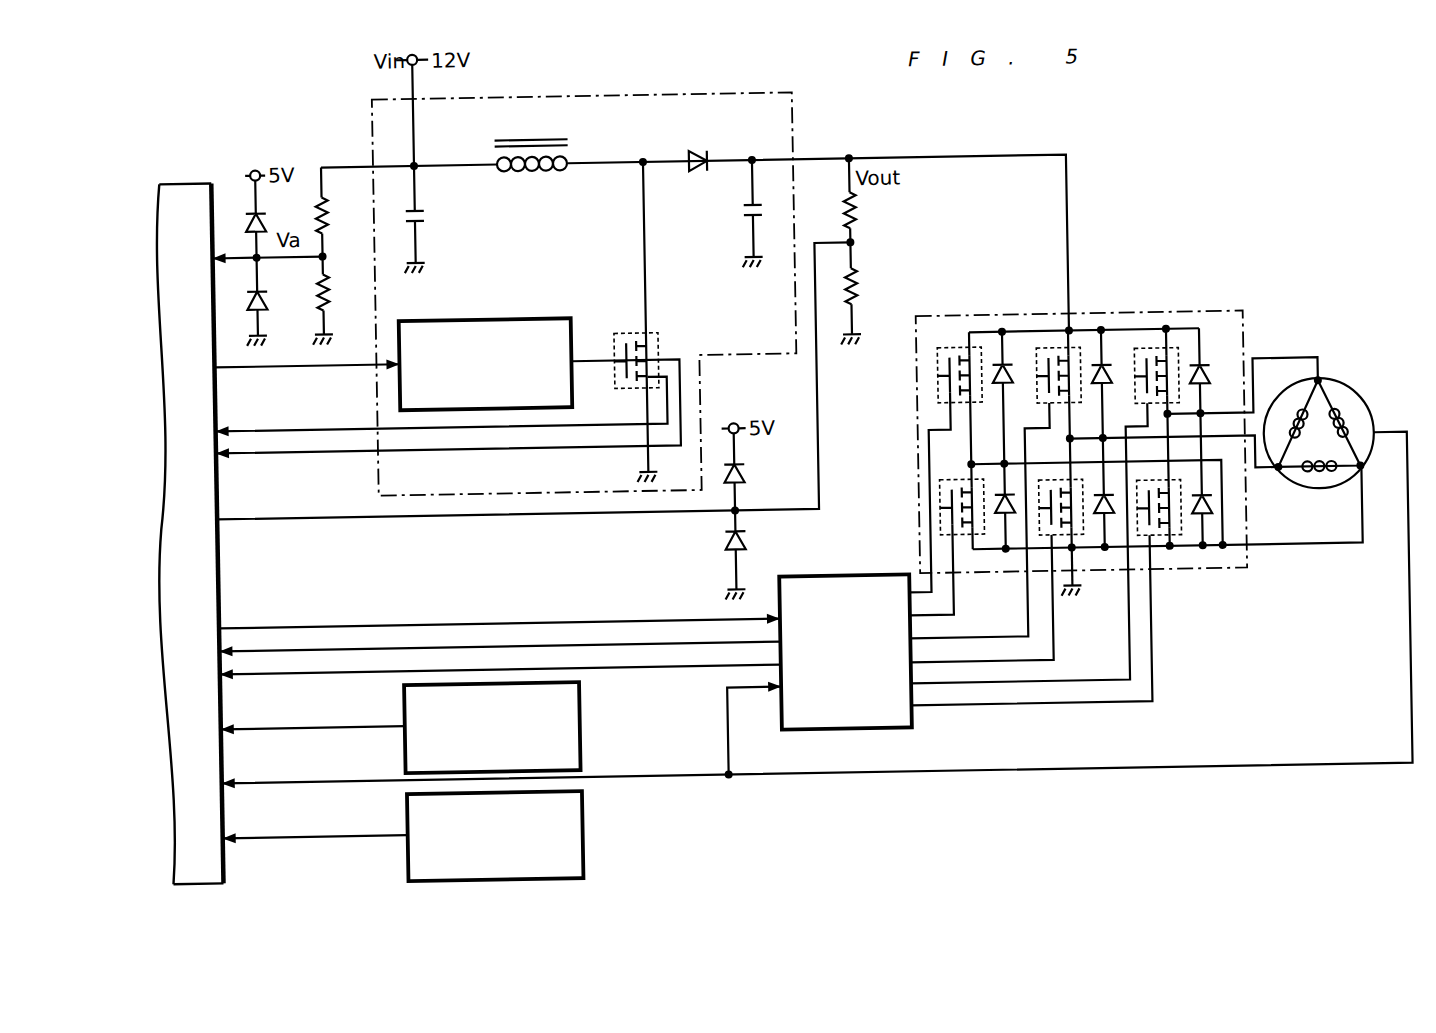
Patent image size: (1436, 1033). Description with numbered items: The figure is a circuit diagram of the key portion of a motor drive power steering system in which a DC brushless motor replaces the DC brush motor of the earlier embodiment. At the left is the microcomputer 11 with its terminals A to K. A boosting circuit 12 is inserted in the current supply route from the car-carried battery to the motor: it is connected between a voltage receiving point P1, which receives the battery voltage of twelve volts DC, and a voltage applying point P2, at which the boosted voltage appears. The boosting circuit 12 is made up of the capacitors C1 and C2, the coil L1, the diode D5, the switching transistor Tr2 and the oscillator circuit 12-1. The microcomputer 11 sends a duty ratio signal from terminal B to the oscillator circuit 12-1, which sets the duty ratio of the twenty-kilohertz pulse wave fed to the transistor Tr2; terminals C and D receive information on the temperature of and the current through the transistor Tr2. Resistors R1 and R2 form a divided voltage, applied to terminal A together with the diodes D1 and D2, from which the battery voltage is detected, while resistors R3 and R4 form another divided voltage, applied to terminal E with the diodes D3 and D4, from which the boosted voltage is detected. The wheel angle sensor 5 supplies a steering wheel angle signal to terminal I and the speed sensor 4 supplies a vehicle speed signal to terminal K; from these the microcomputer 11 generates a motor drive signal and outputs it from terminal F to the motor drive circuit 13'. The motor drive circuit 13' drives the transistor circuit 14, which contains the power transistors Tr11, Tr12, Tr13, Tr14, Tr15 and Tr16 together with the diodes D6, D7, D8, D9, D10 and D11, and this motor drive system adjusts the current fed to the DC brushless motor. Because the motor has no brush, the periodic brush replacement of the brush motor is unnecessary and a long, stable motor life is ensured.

The microcomputer 11 is at (215, 176).
The boosting circuit 12 is at (793, 94).
The oscillator circuit 12-1 is at (538, 316).
The motor drive circuit 13' is at (845, 634).
The transistor circuit 14 is at (1245, 320).
The wheel angle sensor 5 is at (575, 683).
The speed sensor 4 is at (576, 793).
The voltage receiving point P1 is at (419, 50).
The voltage applying point P2 is at (854, 158).
The resistor R1 is at (331, 210).
The resistor R2 is at (331, 286).
The resistor R3 is at (861, 214).
The resistor R4 is at (861, 286).
The capacitor C1 is at (426, 208).
The capacitor C2 is at (776, 202).
The coil L1 is at (540, 136).
The diode D1 is at (270, 218).
The diode D2 is at (270, 294).
The diode D3 is at (744, 476).
The diode D4 is at (744, 543).
The diode D5 is at (704, 150).
The diode D6 is at (1000, 368).
The diode D7 is at (1002, 520).
The diode D8 is at (1103, 370).
The diode D9 is at (1101, 522).
The diode D10 is at (1205, 372).
The diode D11 is at (1203, 524).
The switching transistor Tr2 is at (660, 332).
The power transistor Tr11 is at (946, 352).
The power transistor Tr12 is at (939, 495).
The power transistor Tr13 is at (1045, 354).
The power transistor Tr14 is at (1038, 541).
The power transistor Tr15 is at (1150, 356).
The power transistor Tr16 is at (1180, 541).